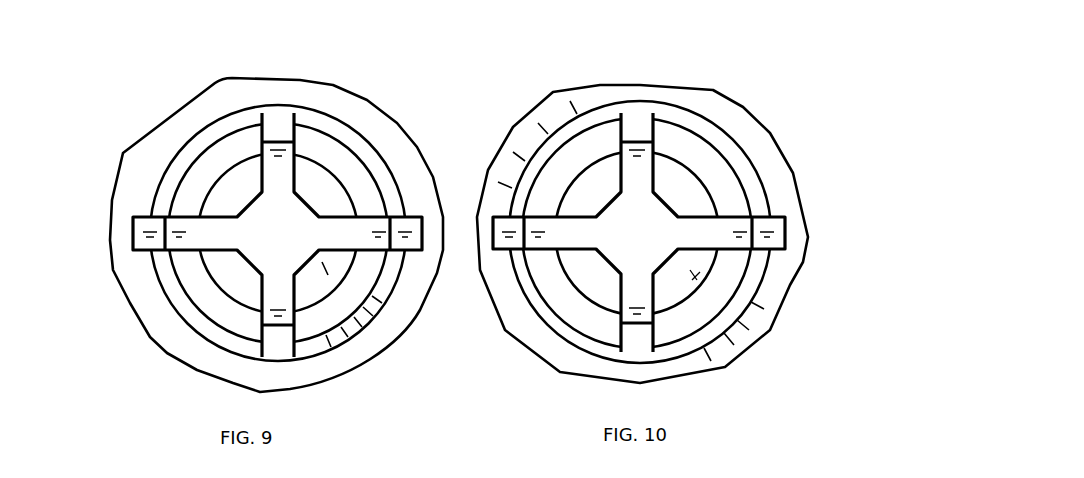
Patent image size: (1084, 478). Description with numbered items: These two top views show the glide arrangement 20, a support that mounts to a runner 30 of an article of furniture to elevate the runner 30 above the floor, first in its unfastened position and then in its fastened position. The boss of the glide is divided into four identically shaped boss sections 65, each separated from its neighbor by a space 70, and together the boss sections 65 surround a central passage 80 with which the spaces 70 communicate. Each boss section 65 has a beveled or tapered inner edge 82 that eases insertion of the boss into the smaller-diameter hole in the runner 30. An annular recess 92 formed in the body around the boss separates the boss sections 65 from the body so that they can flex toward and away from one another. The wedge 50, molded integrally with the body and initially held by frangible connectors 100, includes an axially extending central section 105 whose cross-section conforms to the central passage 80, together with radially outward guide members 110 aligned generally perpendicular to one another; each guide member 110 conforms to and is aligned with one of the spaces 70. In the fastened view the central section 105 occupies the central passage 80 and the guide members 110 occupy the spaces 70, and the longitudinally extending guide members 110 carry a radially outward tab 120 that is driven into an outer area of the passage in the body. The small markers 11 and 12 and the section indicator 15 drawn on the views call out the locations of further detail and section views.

In FIG. 9, the detail view indicator 11 is at (243, 176).
In FIG. 10, the detail view indicator 12 is at (600, 178).
In FIG. 10, the section line 15 is at (522, 67).
In FIG. 9, the glide arrangement 20 is at (358, 343).
In FIG. 10, the glide arrangement 20 is at (765, 283).
In FIG. 9, the runner 30 is at (378, 133).
In FIG. 10, the runner 30 is at (742, 167).
In FIG. 10, the wedge 50 is at (740, 183).
In FIG. 9, the boss sections 65 is at (205, 147).
In FIG. 10, the boss sections 65 is at (587, 127).
In FIG. 9, the space 70 is at (280, 122).
In FIG. 10, the space 70 is at (637, 127).
In FIG. 9, the central passage 80 is at (268, 252).
In FIG. 9, the tapered inner edge 82 is at (195, 178).
In FIG. 10, the tapered inner edge 82 is at (568, 163).
In FIG. 9, the annular recess 92 is at (167, 183).
In FIG. 10, the annular recess 92 is at (760, 152).
In FIG. 9, the frangible connectors 100 is at (248, 123).
In FIG. 10, the central section 105 is at (700, 285).
In FIG. 10, the guide members 110 is at (748, 138).
In FIG. 10, the tab 120 is at (480, 212).